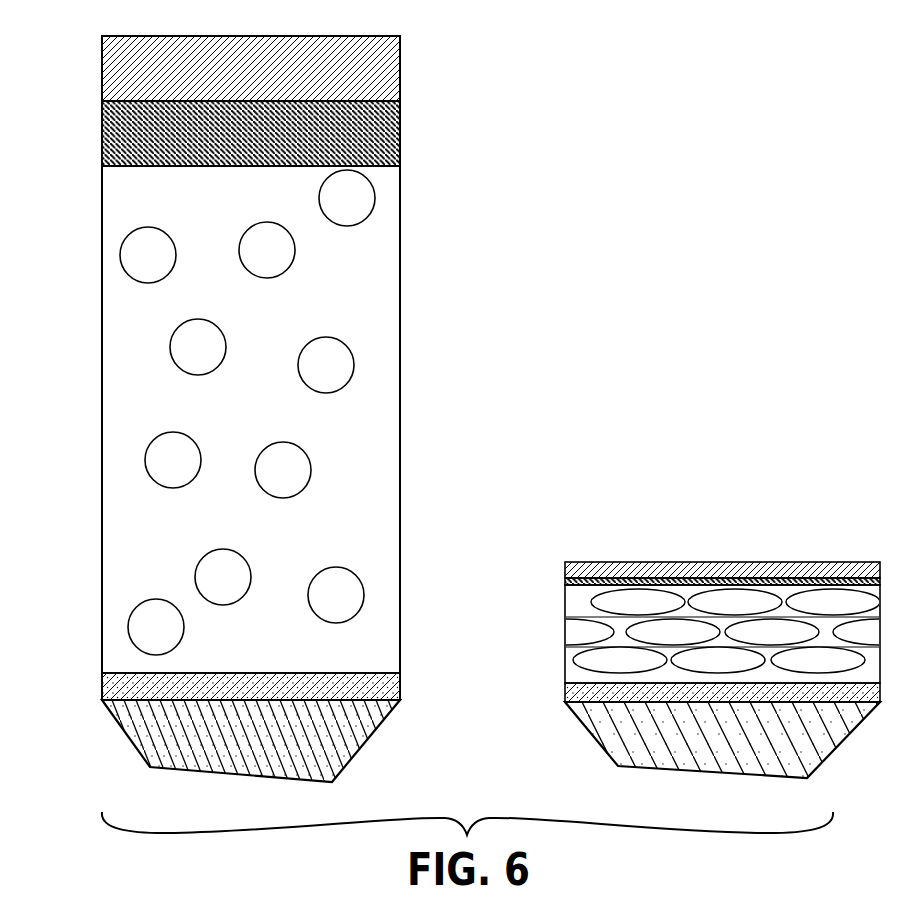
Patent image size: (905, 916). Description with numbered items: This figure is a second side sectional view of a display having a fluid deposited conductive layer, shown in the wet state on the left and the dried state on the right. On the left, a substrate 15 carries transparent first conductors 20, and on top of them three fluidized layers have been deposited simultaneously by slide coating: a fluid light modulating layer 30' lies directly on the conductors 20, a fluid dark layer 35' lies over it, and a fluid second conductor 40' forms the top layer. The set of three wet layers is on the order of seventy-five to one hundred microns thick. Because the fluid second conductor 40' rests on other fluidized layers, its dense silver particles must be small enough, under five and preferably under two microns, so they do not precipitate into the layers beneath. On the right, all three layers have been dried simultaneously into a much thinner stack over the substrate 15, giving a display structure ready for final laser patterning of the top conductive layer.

The substrate 15 is at (128, 739).
The transparent first conductors 20 is at (102, 688).
The fluid light modulating layer 30' is at (464, 424).
The fluid dark layer 35' is at (451, 348).
The fluid second conductor 40' is at (451, 307).